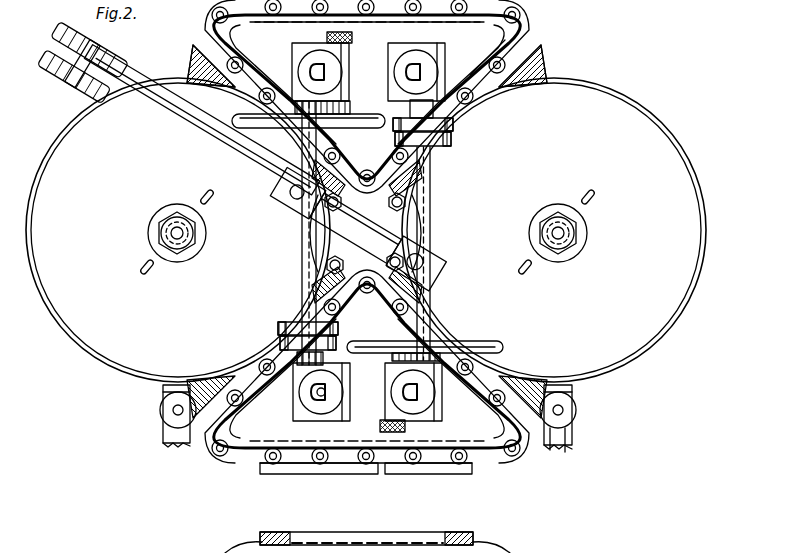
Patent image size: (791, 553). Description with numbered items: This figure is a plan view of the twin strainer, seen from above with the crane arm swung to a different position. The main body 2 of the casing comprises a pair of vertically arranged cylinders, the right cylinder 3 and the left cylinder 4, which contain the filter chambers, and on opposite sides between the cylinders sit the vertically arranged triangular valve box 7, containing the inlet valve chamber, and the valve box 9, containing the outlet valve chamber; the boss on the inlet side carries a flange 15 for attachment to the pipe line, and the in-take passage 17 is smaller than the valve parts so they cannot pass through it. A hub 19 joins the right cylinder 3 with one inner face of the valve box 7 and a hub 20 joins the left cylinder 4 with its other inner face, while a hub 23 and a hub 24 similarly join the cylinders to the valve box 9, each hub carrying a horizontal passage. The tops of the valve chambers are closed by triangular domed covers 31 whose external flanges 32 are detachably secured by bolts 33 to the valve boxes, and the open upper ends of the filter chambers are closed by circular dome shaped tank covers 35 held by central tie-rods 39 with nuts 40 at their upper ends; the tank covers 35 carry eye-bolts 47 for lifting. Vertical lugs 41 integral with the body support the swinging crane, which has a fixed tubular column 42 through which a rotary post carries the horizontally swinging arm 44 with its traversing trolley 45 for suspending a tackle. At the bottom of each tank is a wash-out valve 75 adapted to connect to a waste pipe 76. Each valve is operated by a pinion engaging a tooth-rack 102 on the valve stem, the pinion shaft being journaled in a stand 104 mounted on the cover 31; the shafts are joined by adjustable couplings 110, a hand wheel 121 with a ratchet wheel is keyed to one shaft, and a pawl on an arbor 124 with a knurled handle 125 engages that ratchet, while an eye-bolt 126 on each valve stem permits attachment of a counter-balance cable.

The main body 2 is at (348, 103).
The right cylinder 3 is at (640, 122).
The left cylinder 4 is at (62, 142).
The valve box 7 is at (497, 447).
The valve box 9 is at (500, 33).
The flange 15 is at (455, 475).
The in-take passage 17 is at (375, 512).
The hub 19 is at (572, 440).
The hub 20 is at (170, 435).
The hub 23 is at (522, 62).
The hub 24 is at (197, 70).
The domed cover 31 is at (368, 233).
The external flange 32 is at (311, 475).
The bolts 33 is at (400, 460).
The tank cover 35 is at (362, 215).
The tie-rod 39 is at (190, 235).
The nut 40 is at (166, 226).
The vertical lugs 41 is at (414, 190).
The fixed tubular column 42 is at (358, 229).
The horizontally swinging arm 44 is at (195, 132).
The traversing trolley 45 is at (87, 55).
The eye-bolts 47 is at (149, 268).
The wash-out valve 75 is at (573, 410).
The waste pipe 76 is at (575, 450).
The tooth-rack 102 is at (318, 394).
The stand 104 is at (432, 395).
The adjustable coupling 110 is at (279, 326).
The hand wheel 121 is at (478, 341).
The arbor 124 is at (426, 290).
The knurled handle 125 is at (371, 429).
The eye-bolt 126 is at (326, 394).